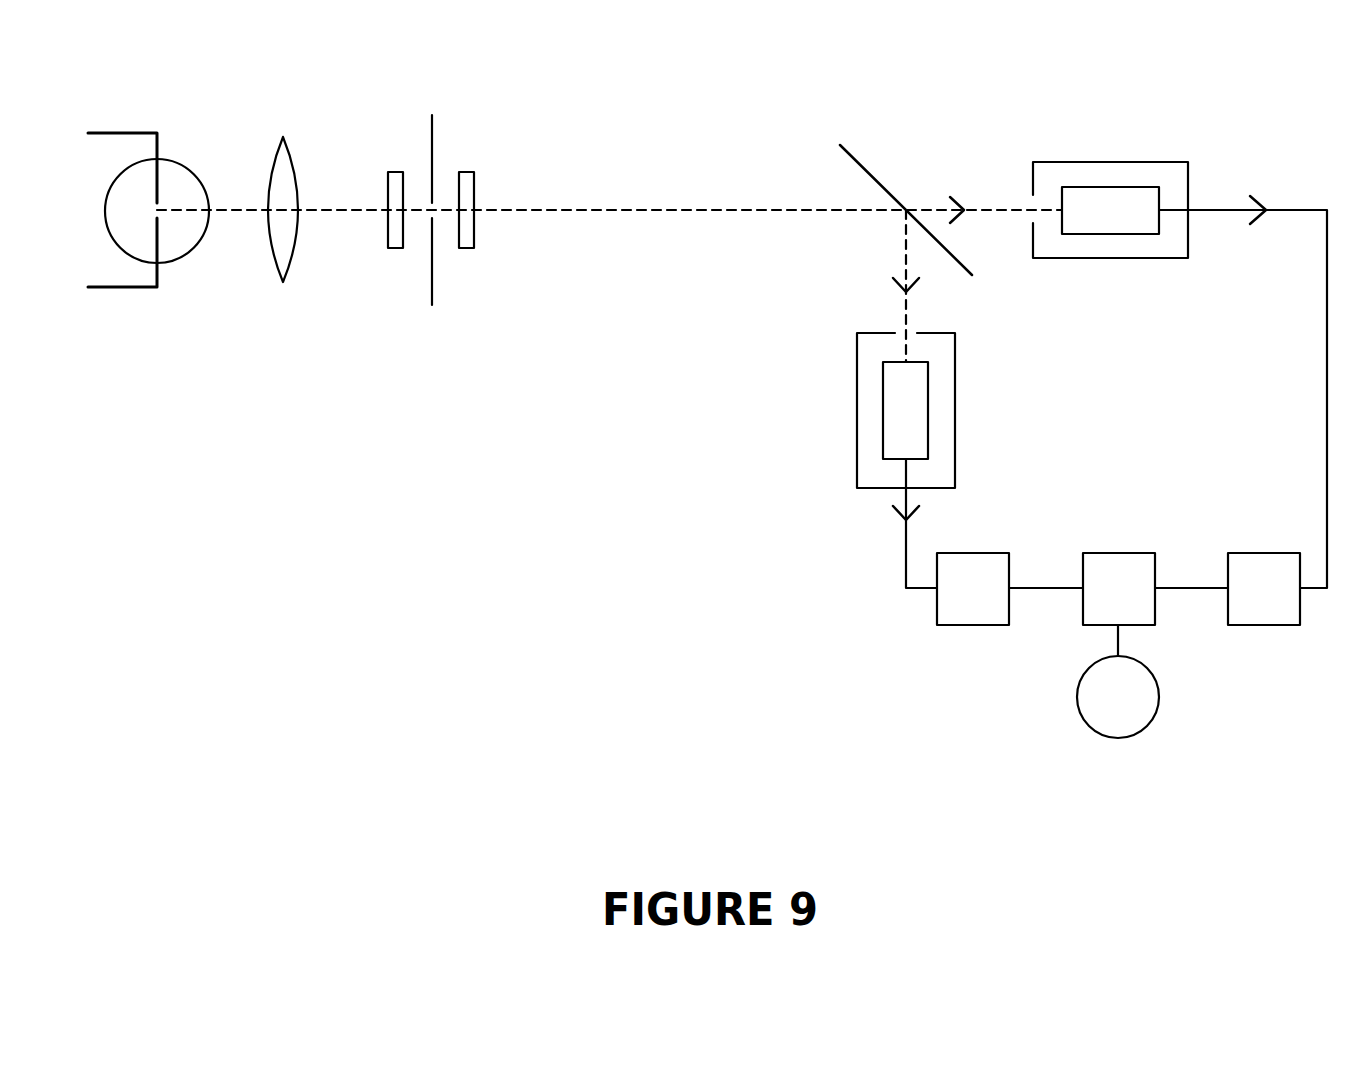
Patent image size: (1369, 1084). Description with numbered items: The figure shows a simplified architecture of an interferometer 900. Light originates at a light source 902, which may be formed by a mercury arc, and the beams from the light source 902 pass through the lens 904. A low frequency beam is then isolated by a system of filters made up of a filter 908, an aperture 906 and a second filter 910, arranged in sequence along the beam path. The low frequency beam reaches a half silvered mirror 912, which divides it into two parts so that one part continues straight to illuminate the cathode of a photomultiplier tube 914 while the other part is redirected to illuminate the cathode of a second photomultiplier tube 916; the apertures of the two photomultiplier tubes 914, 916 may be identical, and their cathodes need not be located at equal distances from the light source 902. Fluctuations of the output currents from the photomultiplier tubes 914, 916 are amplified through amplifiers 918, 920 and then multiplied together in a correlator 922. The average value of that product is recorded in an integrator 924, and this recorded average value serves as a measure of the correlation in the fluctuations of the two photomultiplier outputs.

The interferometer 900 is at (699, 463).
The light source 902 is at (127, 288).
The lens 904 is at (283, 283).
The aperture 906 is at (432, 283).
The filter 908 is at (396, 172).
The filter 910 is at (467, 172).
The half silvered mirror 912 is at (867, 169).
The photomultiplier tube 914 is at (1113, 170).
The photomultiplier tube 916 is at (943, 410).
The amplifier 918 is at (1265, 618).
The amplifier 920 is at (975, 618).
The correlator 922 is at (1118, 565).
The integrator 924 is at (1118, 728).